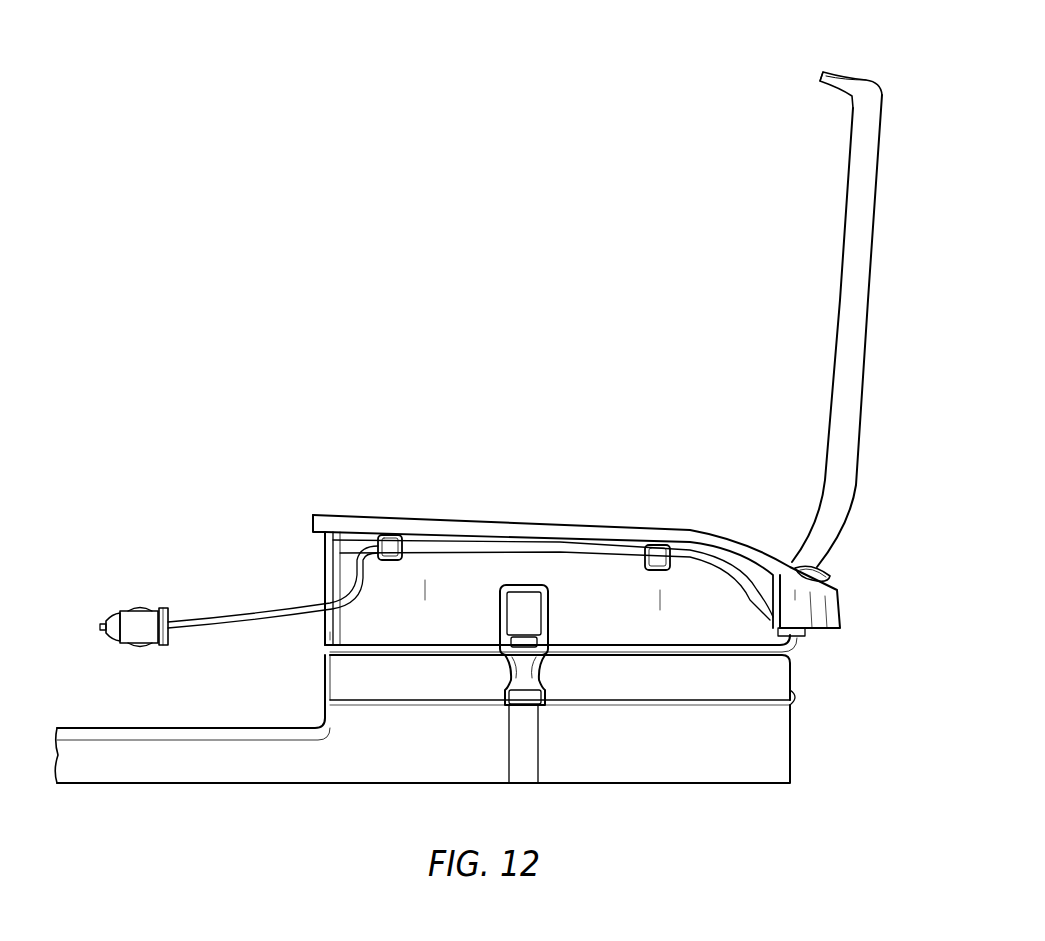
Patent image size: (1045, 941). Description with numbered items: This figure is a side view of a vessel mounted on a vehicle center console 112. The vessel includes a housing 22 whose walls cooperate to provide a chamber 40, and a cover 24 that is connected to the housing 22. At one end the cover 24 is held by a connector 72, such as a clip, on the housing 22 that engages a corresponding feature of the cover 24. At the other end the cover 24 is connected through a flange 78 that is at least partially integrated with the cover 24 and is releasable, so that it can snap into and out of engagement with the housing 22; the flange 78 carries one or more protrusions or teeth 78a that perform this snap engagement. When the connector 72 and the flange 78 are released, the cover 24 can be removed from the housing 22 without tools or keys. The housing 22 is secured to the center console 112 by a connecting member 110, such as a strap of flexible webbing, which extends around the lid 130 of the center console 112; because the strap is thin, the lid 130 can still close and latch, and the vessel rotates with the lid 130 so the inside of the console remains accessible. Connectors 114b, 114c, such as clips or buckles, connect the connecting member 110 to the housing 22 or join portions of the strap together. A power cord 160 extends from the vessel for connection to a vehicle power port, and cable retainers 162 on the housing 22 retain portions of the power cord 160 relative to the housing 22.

The housing 22 is at (352, 614).
The cover 24 is at (813, 291).
The chamber 40 is at (548, 511).
The connector 72 is at (820, 568).
The flange 78 is at (850, 70).
The tooth 78a is at (818, 87).
The connecting member 110 is at (530, 755).
The center console 112 is at (770, 748).
The connector 114b is at (523, 612).
The connector 114c is at (527, 668).
The lid 130 is at (777, 677).
The power cord 160 is at (167, 592).
The cable retainer 162 is at (390, 545).